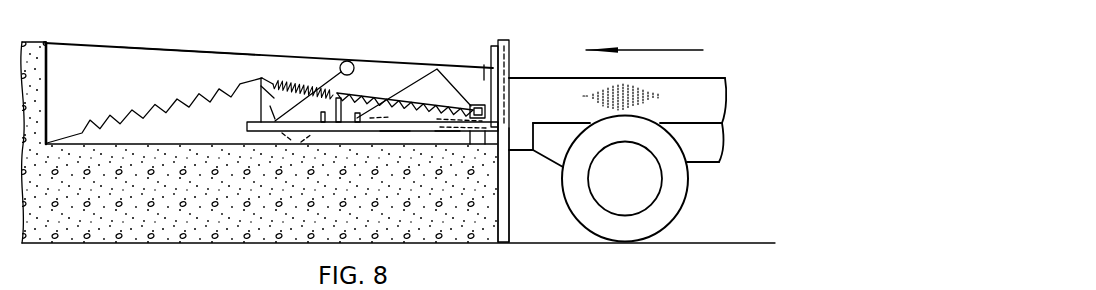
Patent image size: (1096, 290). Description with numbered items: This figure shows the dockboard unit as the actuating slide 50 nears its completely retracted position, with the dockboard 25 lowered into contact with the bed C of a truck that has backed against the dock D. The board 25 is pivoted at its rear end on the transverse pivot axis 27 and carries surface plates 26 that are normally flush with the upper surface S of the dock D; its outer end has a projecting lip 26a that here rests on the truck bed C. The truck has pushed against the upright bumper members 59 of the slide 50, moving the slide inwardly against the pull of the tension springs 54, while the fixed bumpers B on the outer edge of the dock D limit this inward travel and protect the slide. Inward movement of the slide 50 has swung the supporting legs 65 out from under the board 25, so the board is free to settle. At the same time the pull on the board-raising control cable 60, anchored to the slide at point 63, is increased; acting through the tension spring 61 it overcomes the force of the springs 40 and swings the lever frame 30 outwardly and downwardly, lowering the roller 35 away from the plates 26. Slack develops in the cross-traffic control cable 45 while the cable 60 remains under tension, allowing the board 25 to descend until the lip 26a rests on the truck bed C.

The upper surface of the dock S is at (33, 42).
The transverse pivot axis 27 is at (47, 43).
The surface plates 26 is at (177, 50).
The dockboard 25 is at (238, 51).
The spring 40 is at (160, 108).
The lever frame 30 is at (255, 107).
The roller 35 is at (348, 61).
The tension spring 61 is at (294, 92).
The tension springs 54 is at (405, 97).
The anchor point 63 is at (362, 112).
The supporting legs 65 is at (449, 95).
The cable 45 is at (307, 133).
The actuating slide 50 is at (395, 136).
The board-raising control cable 60 is at (447, 131).
The upright bumper members 59 is at (509, 40).
The lip 26a is at (518, 76).
The fixed bumpers B is at (510, 215).
The truck bed C is at (707, 78).
The dock D is at (187, 236).